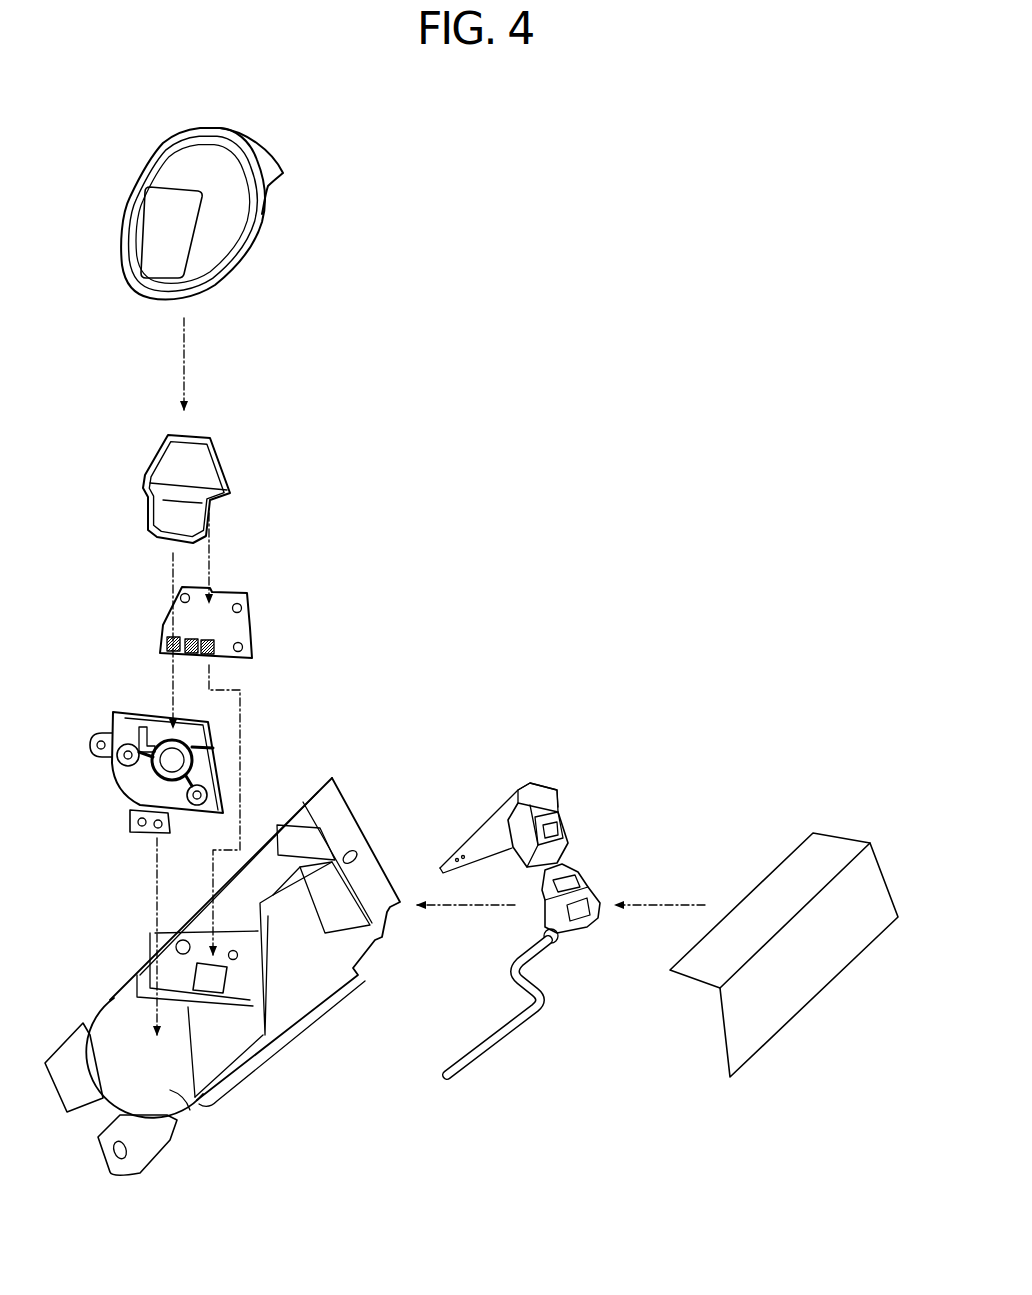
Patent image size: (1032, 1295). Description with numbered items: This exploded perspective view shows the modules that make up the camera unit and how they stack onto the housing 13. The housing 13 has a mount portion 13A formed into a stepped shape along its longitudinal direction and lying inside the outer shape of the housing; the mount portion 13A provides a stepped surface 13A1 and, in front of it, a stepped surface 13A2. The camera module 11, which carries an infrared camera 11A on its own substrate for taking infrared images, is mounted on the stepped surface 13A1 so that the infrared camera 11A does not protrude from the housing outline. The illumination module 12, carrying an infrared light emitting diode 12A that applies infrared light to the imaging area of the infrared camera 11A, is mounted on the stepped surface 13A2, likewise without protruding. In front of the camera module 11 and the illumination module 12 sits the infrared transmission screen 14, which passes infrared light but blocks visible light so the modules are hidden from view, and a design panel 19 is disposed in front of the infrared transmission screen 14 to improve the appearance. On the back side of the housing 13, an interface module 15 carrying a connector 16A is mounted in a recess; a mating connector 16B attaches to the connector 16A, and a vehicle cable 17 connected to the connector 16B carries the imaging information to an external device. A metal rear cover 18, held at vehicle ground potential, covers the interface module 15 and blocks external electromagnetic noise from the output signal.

The camera module 11 is at (139, 742).
The infrared camera 11A is at (158, 770).
The illumination module 12 is at (291, 614).
The infrared light emitting diode 12A is at (215, 642).
The housing 13 is at (239, 955).
The mount portion 13A is at (178, 1067).
The stepped surface 13A1 is at (170, 1092).
The stepped surface 13A2 is at (232, 973).
The infrared transmission screen 14 is at (228, 461).
The interface module 15 is at (490, 837).
The connector 16A is at (560, 808).
The connector 16B is at (588, 880).
The vehicle cable 17 is at (525, 1003).
The rear cover 18 is at (803, 867).
The design panel 19 is at (264, 212).